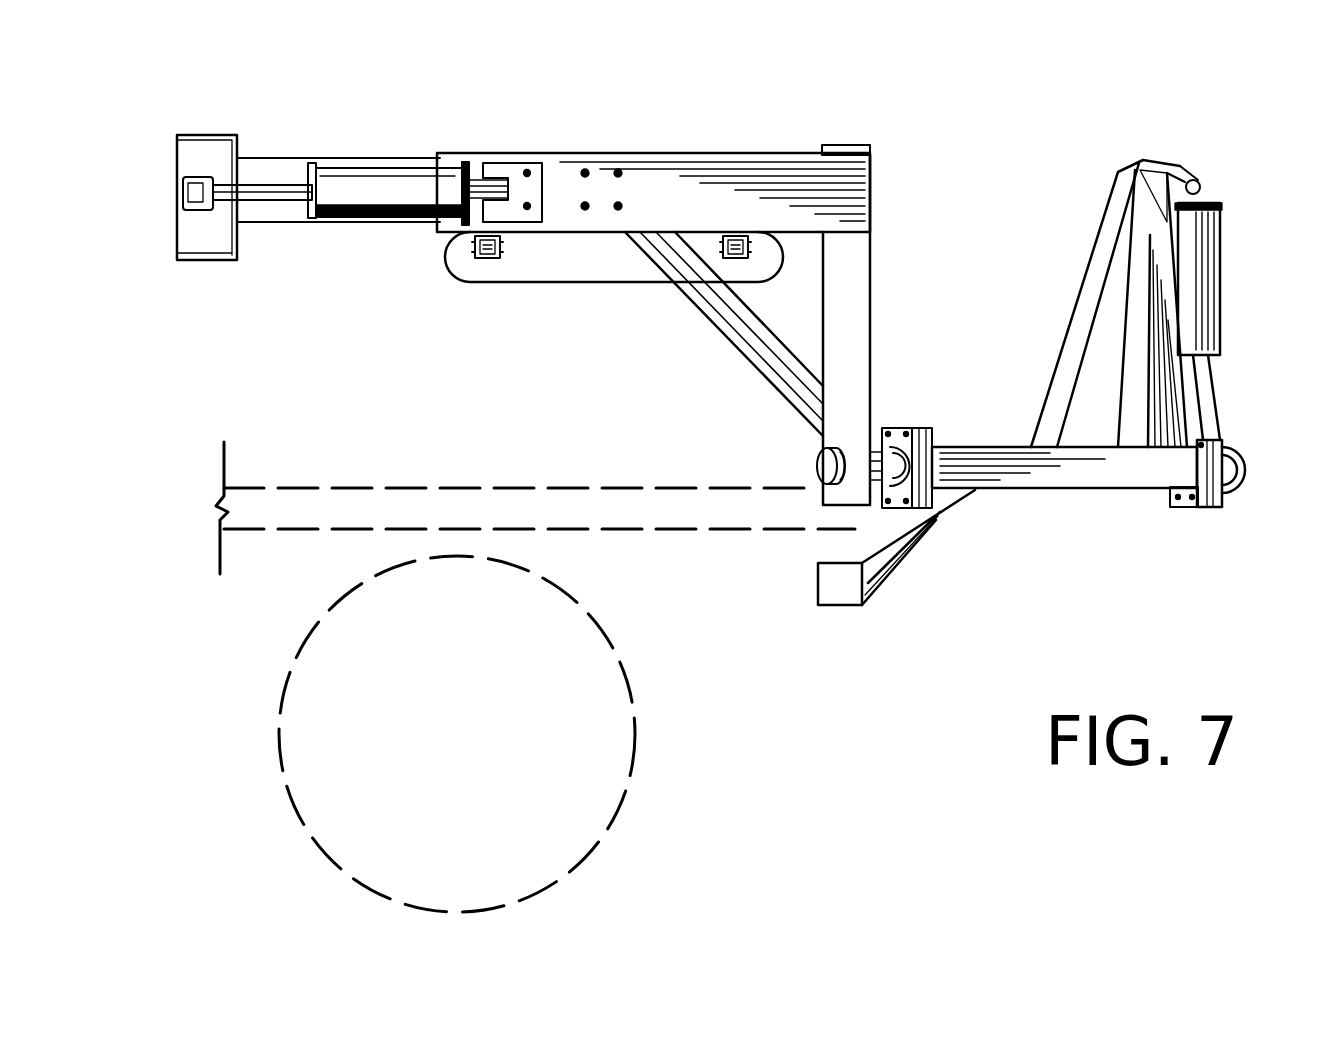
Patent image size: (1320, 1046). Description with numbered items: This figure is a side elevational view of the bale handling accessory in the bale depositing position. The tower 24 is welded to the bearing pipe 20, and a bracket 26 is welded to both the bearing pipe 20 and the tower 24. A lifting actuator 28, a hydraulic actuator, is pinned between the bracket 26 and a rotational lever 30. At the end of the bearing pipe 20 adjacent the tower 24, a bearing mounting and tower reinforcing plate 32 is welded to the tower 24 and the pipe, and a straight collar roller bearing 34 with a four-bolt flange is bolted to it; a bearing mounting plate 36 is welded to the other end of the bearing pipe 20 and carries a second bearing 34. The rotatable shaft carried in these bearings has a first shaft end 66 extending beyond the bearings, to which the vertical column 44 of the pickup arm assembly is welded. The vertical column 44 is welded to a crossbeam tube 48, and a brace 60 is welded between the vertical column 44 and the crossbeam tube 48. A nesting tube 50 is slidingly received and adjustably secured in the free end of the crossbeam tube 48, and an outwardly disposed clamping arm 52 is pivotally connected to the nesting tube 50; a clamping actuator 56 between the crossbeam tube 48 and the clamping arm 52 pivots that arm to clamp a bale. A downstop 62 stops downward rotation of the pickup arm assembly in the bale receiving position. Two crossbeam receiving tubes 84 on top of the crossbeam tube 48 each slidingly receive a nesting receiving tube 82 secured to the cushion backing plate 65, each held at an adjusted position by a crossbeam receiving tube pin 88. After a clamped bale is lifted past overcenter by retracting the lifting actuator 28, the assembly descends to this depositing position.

The bearing pipe 20 is at (1005, 446).
The tower 24 is at (1113, 373).
The bracket 26 is at (1067, 327).
The lifting actuator 28 is at (1217, 277).
The rotational lever 30 is at (1242, 457).
The bearing mounting and tower reinforcing plate 32 is at (1185, 510).
The straight collar roller bearing 34 is at (895, 425).
The bearing mounting plate 36 is at (930, 425).
The vertical column 44 is at (873, 306).
The crossbeam tube 48 is at (612, 153).
The nesting tube 50 is at (325, 157).
The outwardly disposed clamping arm 52 is at (205, 134).
The clamping actuator 56 is at (390, 188).
The brace 60 is at (728, 323).
The downstop 62 is at (915, 548).
The cushion backing plate 65 is at (637, 283).
The first shaft end 66 is at (815, 455).
The nesting receiving tube 82 is at (483, 260).
The crossbeam receiving tube 84 is at (501, 238).
The crossbeam receiving tube pin 88 is at (505, 260).